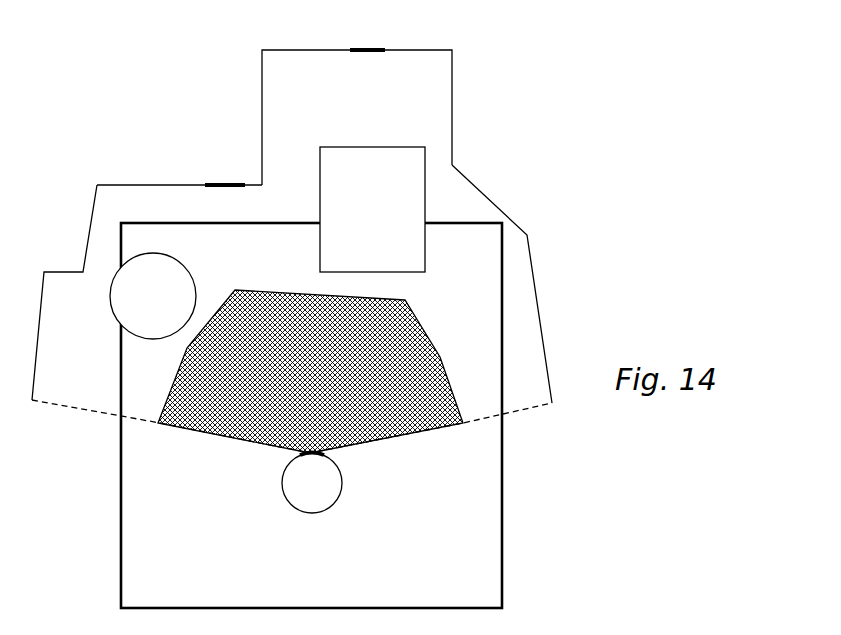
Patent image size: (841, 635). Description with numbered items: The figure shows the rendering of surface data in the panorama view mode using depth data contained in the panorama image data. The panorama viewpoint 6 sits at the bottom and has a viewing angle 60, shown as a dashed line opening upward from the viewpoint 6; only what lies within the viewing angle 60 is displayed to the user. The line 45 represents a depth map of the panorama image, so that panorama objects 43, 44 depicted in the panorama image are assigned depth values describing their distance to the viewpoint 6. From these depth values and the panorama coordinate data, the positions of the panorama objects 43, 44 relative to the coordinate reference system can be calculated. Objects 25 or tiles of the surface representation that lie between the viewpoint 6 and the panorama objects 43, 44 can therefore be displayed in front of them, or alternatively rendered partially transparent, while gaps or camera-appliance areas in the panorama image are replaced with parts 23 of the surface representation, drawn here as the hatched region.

The panorama object 43 is at (360, 38).
The panorama object 44 is at (218, 167).
The line representing depth map 45 is at (83, 270).
The object of the surface representation 25 is at (182, 290).
The part of the surface representation 23 is at (412, 342).
The viewing angle 60 is at (143, 422).
The panorama viewpoint 6 is at (340, 522).